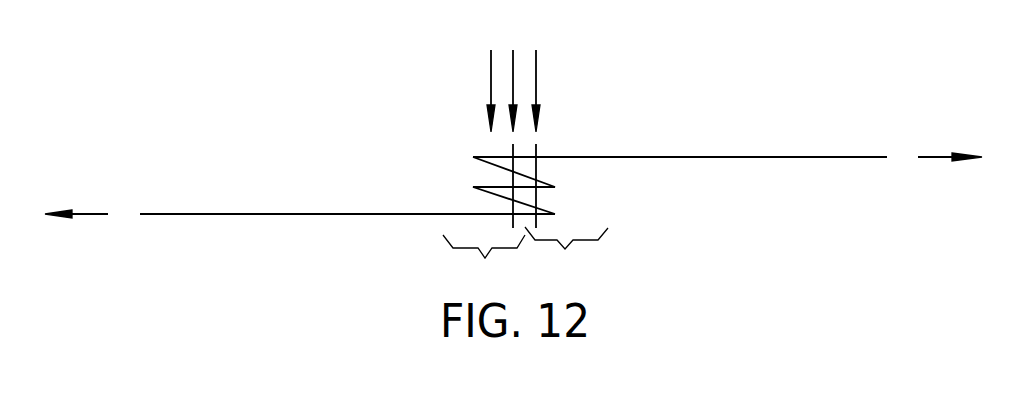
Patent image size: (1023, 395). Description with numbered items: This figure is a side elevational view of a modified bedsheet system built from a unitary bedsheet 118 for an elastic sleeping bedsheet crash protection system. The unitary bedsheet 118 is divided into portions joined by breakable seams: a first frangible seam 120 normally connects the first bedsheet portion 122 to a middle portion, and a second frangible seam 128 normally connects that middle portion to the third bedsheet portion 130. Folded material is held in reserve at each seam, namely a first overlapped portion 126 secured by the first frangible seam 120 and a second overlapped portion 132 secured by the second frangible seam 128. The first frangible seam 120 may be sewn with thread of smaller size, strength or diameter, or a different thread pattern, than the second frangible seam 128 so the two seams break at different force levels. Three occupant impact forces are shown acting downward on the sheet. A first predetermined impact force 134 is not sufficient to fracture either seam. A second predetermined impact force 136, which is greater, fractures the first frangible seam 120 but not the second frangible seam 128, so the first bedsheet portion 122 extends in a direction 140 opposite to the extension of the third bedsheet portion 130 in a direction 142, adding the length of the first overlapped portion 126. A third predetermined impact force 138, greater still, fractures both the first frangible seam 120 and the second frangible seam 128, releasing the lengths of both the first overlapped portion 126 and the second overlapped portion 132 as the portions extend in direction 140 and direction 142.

The unitary bedsheet 118 is at (661, 94).
The first frangible seam 120 is at (511, 179).
The first bedsheet portion 122 is at (268, 215).
The first overlapped portion 126 is at (484, 261).
The second frangible seam 128 is at (536, 170).
The third bedsheet portion 130 is at (727, 158).
The second overlapped portion 132 is at (566, 253).
The first predetermined impact force 134 is at (491, 90).
The second predetermined impact force 136 is at (513, 55).
The third predetermined impact force 138 is at (536, 80).
The direction 140 is at (78, 213).
The direction 142 is at (947, 156).